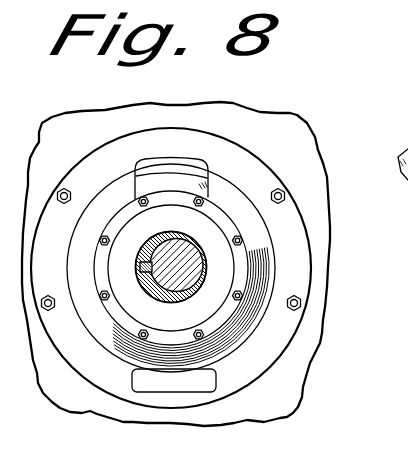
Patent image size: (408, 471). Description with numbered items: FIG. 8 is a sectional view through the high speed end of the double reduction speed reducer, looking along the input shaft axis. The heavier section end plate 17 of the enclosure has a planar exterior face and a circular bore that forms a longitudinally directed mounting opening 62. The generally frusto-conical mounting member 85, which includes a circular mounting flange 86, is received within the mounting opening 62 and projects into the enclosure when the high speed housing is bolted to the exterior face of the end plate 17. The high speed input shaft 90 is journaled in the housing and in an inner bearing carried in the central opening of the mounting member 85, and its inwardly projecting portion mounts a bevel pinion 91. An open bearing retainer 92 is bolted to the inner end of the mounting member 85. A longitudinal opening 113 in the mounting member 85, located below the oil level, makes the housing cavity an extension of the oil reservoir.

The end plate 17 is at (302, 143).
The mounting opening 62 is at (89, 374).
The mounting member 85 is at (266, 270).
The mounting flange 86 is at (240, 158).
The high speed input shaft 90 is at (172, 244).
The bevel pinion 91 is at (203, 262).
The open bearing retainer 92 is at (224, 263).
The longitudinal opening 113 is at (162, 390).